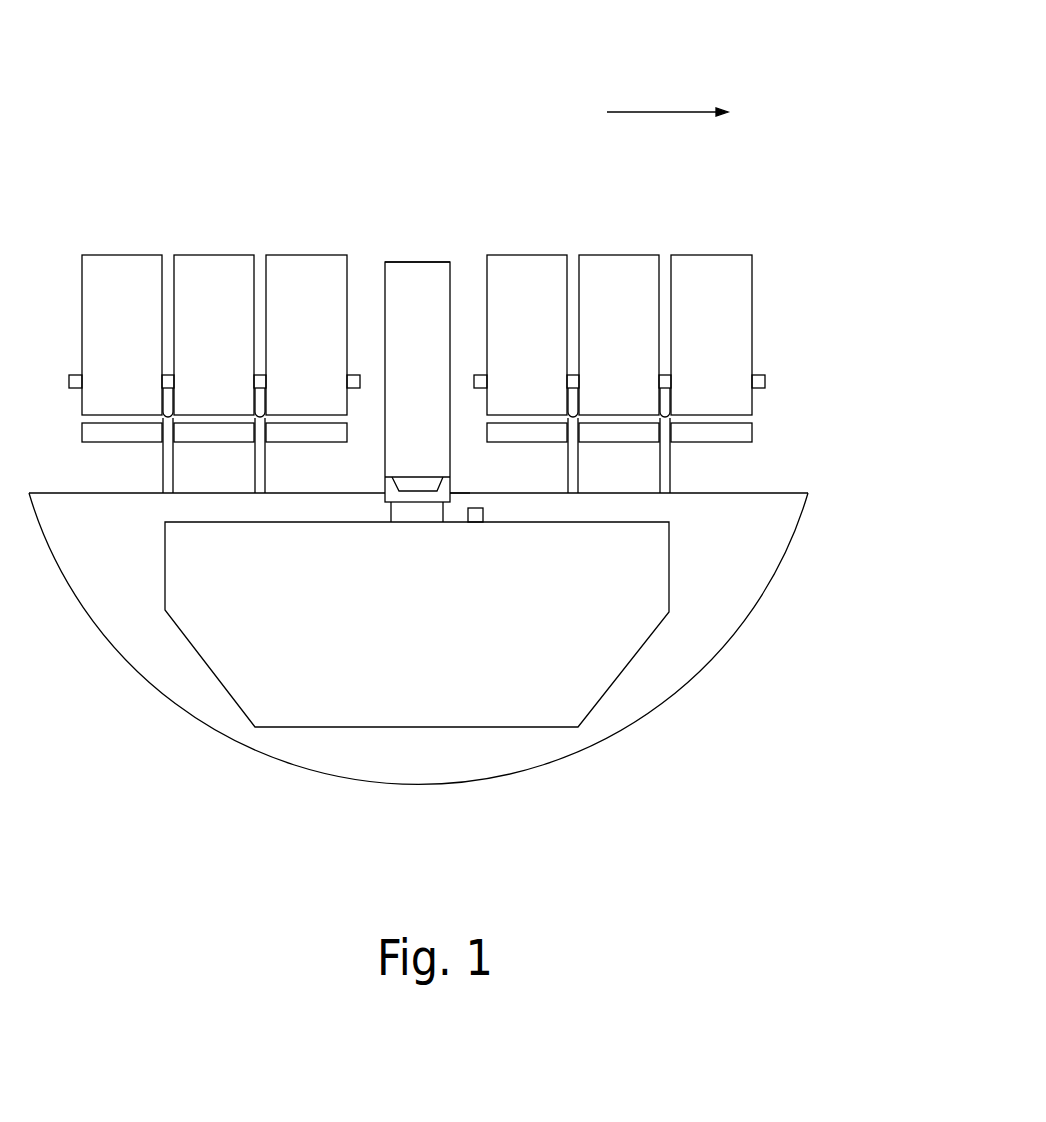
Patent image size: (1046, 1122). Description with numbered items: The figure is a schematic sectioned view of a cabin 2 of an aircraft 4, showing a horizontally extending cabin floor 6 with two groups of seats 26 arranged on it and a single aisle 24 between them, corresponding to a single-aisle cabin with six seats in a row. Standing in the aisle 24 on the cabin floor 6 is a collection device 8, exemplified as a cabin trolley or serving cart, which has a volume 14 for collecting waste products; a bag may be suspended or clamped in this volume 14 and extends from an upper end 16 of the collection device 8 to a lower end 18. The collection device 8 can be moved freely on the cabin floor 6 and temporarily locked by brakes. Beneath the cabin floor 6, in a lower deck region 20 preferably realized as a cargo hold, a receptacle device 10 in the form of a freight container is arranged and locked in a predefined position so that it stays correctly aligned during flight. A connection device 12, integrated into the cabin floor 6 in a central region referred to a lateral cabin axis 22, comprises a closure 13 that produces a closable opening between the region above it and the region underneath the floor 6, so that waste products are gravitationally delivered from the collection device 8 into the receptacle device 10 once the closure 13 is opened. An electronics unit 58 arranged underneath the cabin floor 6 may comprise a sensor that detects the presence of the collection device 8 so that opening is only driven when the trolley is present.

The cabin 2 is at (488, 133).
The aircraft 4 is at (782, 562).
The cabin floor 6 is at (643, 492).
The collection device 8 is at (416, 314).
The receptacle device 10 is at (446, 673).
The connection device 12 is at (464, 492).
The closure 13 is at (421, 510).
The volume 14 is at (397, 318).
The upper end 16 is at (414, 248).
The lower end 18 is at (381, 498).
The lower deck region 20 is at (708, 636).
The lateral cabin axis 22 is at (667, 97).
The aisle 24 is at (468, 376).
The groups of seats 26 is at (212, 238).
The electronics unit 58 is at (485, 514).